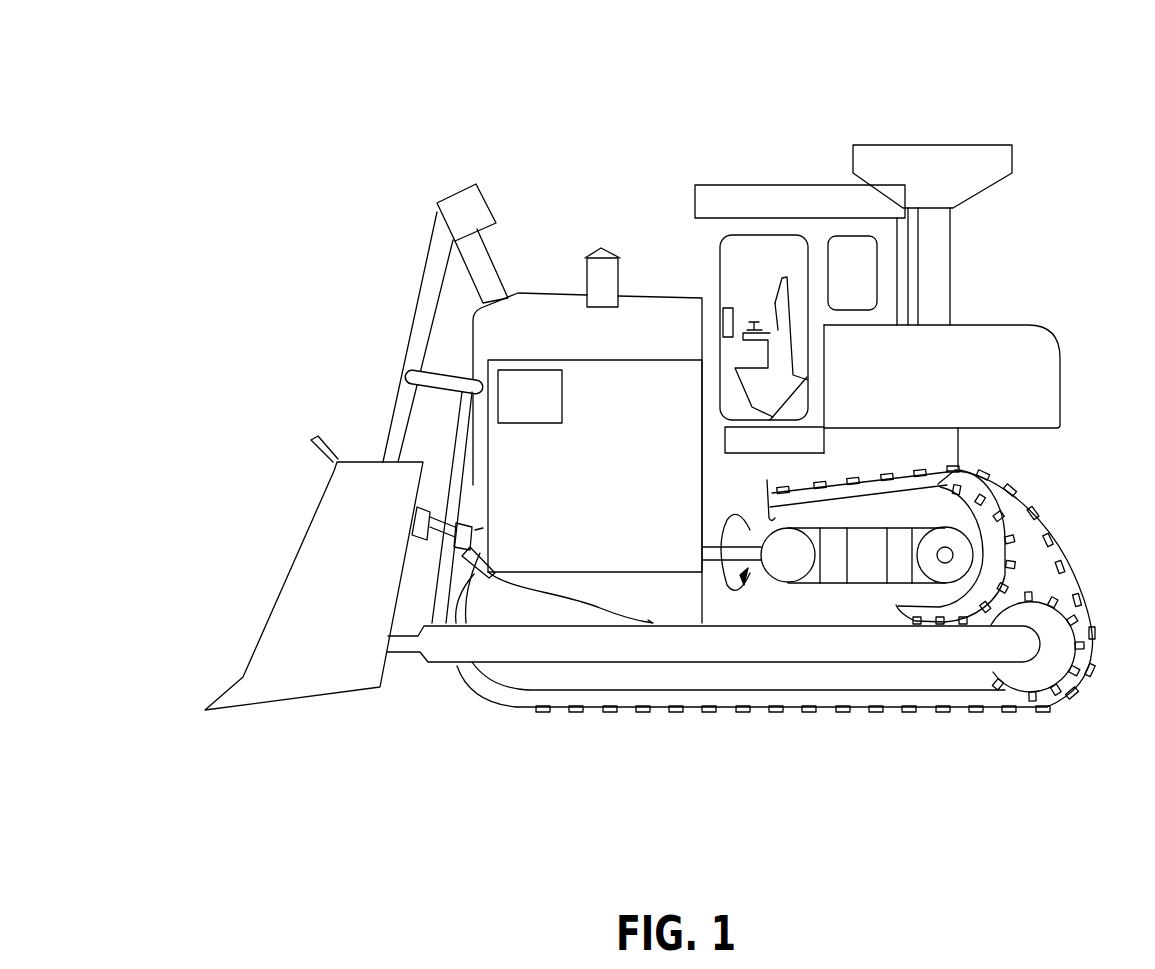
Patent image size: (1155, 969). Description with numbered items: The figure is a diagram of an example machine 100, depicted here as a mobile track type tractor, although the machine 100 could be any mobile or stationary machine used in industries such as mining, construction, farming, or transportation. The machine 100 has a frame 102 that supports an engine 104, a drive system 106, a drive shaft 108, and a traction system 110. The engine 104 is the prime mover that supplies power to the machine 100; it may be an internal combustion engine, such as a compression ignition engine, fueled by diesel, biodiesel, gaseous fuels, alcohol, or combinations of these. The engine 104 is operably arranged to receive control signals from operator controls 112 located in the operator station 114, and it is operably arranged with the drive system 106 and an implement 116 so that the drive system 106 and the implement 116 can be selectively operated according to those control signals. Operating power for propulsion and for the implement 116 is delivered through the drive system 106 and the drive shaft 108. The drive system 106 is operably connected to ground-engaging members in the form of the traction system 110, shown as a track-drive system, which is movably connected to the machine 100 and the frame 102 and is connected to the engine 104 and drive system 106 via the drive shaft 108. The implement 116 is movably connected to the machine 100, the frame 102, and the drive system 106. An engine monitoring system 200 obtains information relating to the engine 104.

The machine 100 is at (170, 54).
The frame 102 is at (594, 352).
The engine 104 is at (614, 478).
The engine monitoring system 200 is at (548, 409).
The drive system 106 is at (855, 593).
The drive shaft 108 is at (712, 565).
The traction system 110 is at (1065, 612).
The operator controls 112 is at (721, 312).
The operator station 114 is at (773, 231).
The implement 116 is at (312, 513).